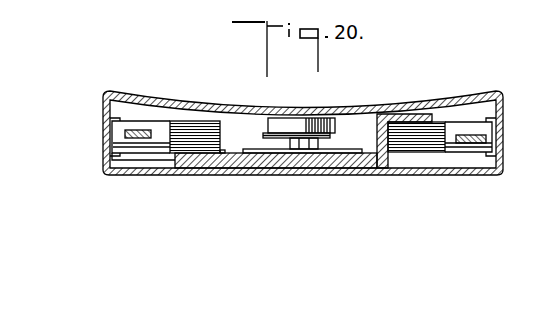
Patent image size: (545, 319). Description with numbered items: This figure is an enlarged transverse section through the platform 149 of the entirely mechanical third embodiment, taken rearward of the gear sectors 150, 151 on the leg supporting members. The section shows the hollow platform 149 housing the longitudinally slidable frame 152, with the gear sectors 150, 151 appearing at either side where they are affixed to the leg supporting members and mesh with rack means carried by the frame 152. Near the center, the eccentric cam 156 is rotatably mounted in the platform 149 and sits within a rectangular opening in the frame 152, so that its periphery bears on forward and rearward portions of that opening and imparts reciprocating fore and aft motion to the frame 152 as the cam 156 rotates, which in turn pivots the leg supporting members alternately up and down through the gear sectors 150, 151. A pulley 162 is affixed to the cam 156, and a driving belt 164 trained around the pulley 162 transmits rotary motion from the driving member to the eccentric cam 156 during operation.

The platform 149 is at (103, 136).
The gear sector 150 is at (194, 125).
The gear sector 151 is at (418, 125).
The longitudinally slidable frame 152 is at (272, 161).
The eccentric cam 156 is at (328, 154).
The pulley 162 is at (333, 132).
The driving belt 164 is at (266, 124).